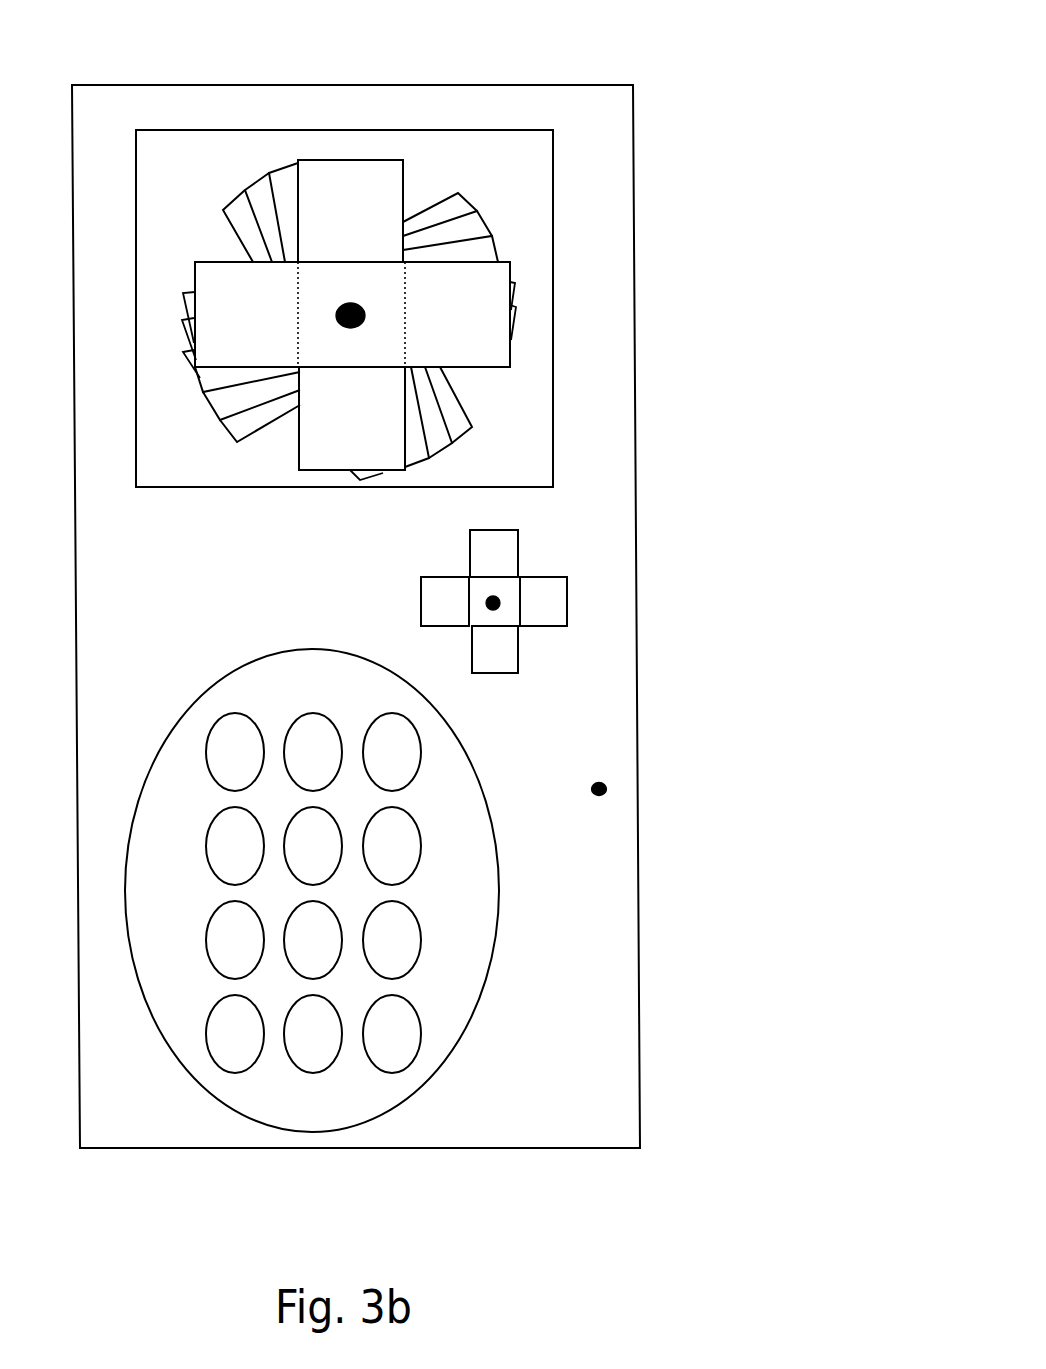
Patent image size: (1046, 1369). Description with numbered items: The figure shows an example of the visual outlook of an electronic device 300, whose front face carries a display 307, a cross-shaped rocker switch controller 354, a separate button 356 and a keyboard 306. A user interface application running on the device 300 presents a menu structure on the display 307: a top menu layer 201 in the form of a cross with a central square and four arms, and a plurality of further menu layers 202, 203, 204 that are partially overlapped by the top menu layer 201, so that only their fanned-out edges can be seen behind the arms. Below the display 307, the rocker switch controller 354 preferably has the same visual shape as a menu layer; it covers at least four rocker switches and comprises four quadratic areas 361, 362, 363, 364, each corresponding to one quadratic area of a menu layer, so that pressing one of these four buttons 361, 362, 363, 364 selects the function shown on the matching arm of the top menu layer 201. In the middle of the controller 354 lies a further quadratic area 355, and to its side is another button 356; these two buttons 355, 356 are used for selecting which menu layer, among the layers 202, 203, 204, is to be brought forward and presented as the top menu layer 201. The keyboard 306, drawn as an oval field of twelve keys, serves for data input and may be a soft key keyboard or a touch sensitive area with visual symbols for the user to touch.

The device 300 is at (802, 67).
The display 307 is at (382, 130).
The top menu layer 201 is at (407, 178).
The menu layer 202 is at (515, 223).
The menu layer 203 is at (248, 187).
The menu layer 204 is at (237, 443).
The keyboard 306 is at (224, 673).
The rocker switch controller 354 is at (507, 615).
The quadratic area 355 is at (487, 598).
The button 356 is at (605, 786).
The quadratic area 361 is at (503, 542).
The quadratic area 362 is at (542, 608).
The quadratic area 363 is at (507, 662).
The quadratic area 364 is at (432, 613).